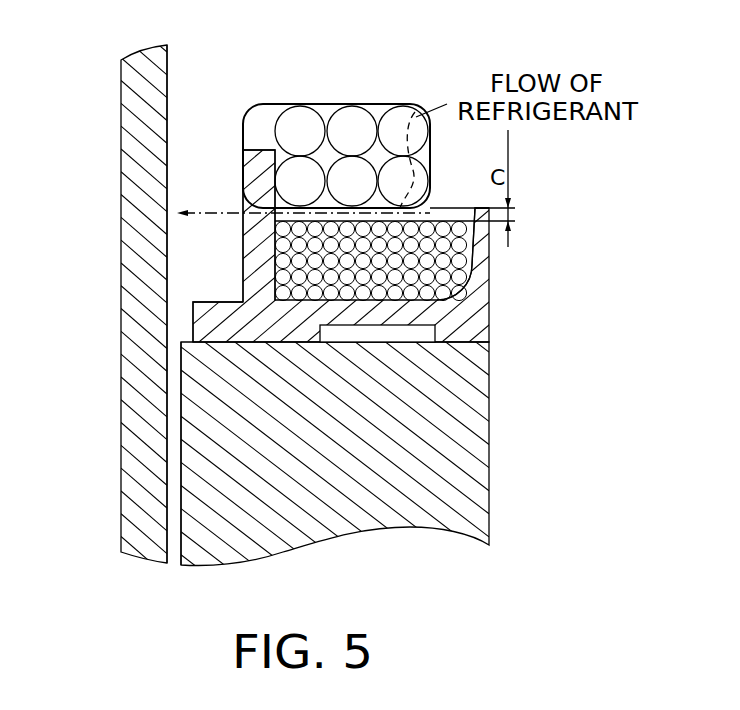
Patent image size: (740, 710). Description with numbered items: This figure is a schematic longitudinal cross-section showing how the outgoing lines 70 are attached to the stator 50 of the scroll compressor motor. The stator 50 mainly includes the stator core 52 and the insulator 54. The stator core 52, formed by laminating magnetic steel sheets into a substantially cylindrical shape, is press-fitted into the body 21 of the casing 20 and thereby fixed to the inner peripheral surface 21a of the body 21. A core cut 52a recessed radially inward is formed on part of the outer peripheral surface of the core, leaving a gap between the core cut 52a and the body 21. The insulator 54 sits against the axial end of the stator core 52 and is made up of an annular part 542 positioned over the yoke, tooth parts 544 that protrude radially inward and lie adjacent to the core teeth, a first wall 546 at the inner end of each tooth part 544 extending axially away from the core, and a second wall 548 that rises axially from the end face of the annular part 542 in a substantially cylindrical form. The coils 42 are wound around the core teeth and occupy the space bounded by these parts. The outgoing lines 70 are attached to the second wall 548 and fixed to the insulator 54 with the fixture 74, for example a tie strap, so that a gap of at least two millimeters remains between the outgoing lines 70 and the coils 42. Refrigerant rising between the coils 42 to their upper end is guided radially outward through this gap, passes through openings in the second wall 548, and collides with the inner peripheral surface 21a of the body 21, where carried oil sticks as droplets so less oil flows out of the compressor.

The casing 20 is at (146, 305).
The body 21 is at (156, 305).
The inner peripheral surface 21a is at (168, 87).
The coils 42 is at (460, 227).
The stator 50 is at (529, 195).
The stator core 52 is at (304, 413).
The core cut 52a is at (176, 420).
The insulator 54 is at (366, 247).
The annular part 542 is at (225, 325).
The tooth parts 544 is at (407, 317).
The first wall 546 is at (489, 258).
The second wall 548 is at (256, 150).
The outgoing lines 70 is at (301, 128).
The fixture 74 is at (336, 114).